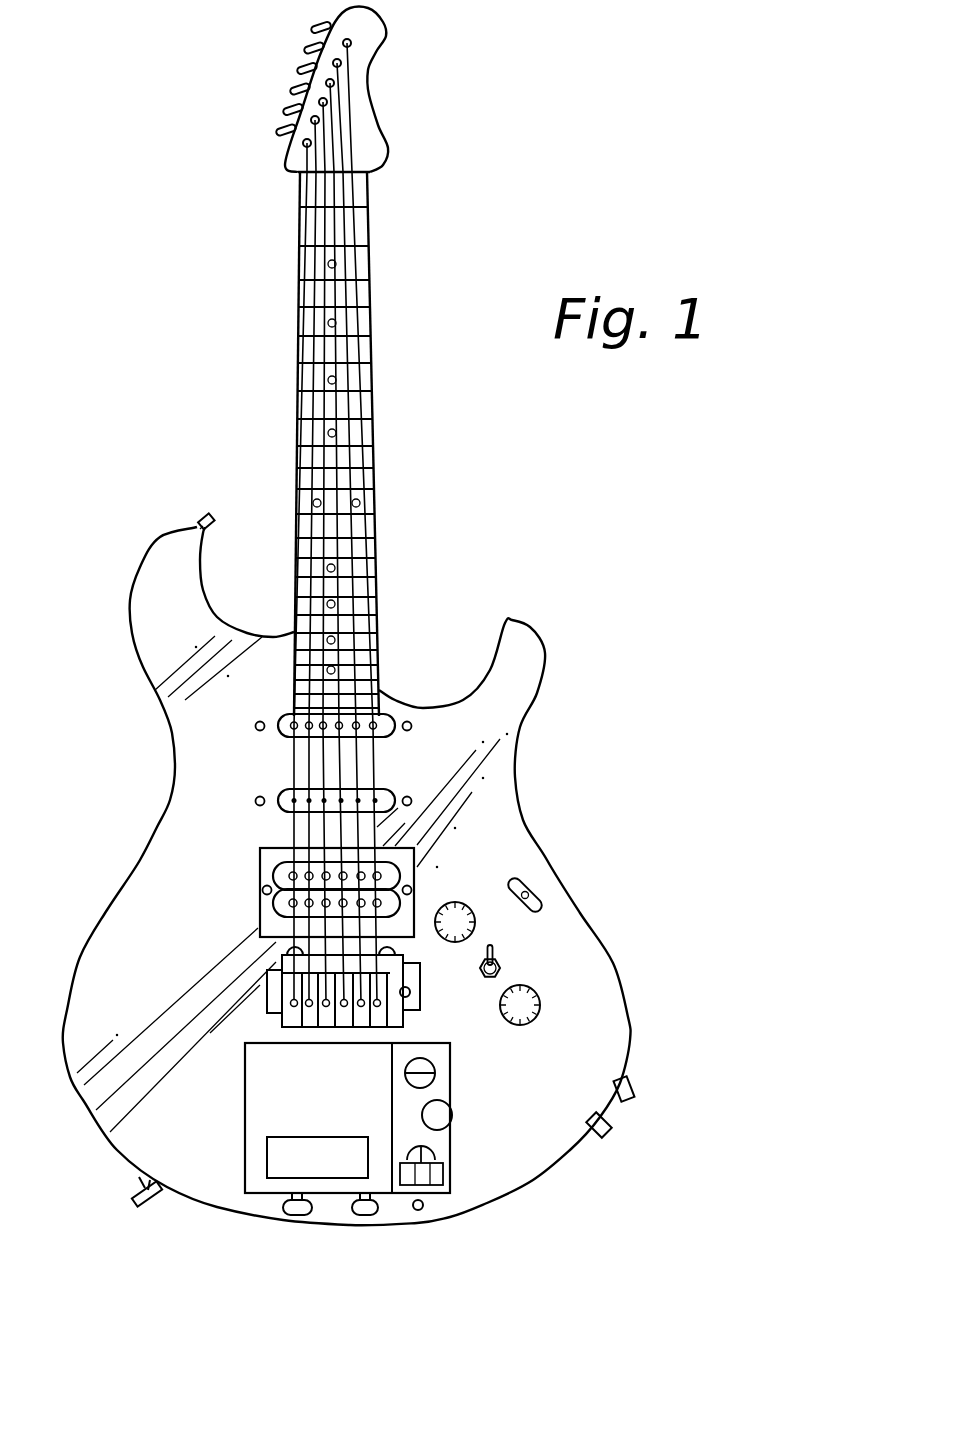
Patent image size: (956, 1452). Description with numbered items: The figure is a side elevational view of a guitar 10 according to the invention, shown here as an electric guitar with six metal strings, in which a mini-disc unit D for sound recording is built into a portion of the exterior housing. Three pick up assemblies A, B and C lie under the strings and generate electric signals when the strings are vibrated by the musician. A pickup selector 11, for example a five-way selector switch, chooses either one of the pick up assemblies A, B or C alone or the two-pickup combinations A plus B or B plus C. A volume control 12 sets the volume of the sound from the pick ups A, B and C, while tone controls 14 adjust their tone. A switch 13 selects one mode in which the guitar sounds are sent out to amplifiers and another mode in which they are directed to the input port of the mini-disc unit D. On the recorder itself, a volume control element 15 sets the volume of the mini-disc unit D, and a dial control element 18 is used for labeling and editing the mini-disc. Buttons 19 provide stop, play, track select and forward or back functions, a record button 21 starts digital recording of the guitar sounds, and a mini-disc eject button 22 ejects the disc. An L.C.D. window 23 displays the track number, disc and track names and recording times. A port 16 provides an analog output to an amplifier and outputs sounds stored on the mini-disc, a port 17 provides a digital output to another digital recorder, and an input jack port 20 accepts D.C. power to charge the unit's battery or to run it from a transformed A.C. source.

The guitar 10 is at (606, 641).
The pickup selector 11 is at (533, 897).
The volume control 12 is at (476, 927).
The switch 13 is at (522, 961).
The tone controls 14 is at (540, 1010).
The volume control element 15 is at (436, 1074).
The port 16 is at (630, 1100).
The port 17 is at (599, 1137).
The dial control element 18 is at (450, 1122).
The buttons 19 is at (474, 1191).
The input jack port 20 is at (420, 1212).
The record button 21 is at (370, 1215).
The mini-disc eject button 22 is at (300, 1215).
The L.C.D. window 23 is at (287, 1168).
The pick up assembly A is at (233, 718).
The pick up assembly B is at (235, 788).
The pick up assembly C is at (240, 870).
The mini-disc unit D is at (206, 1021).